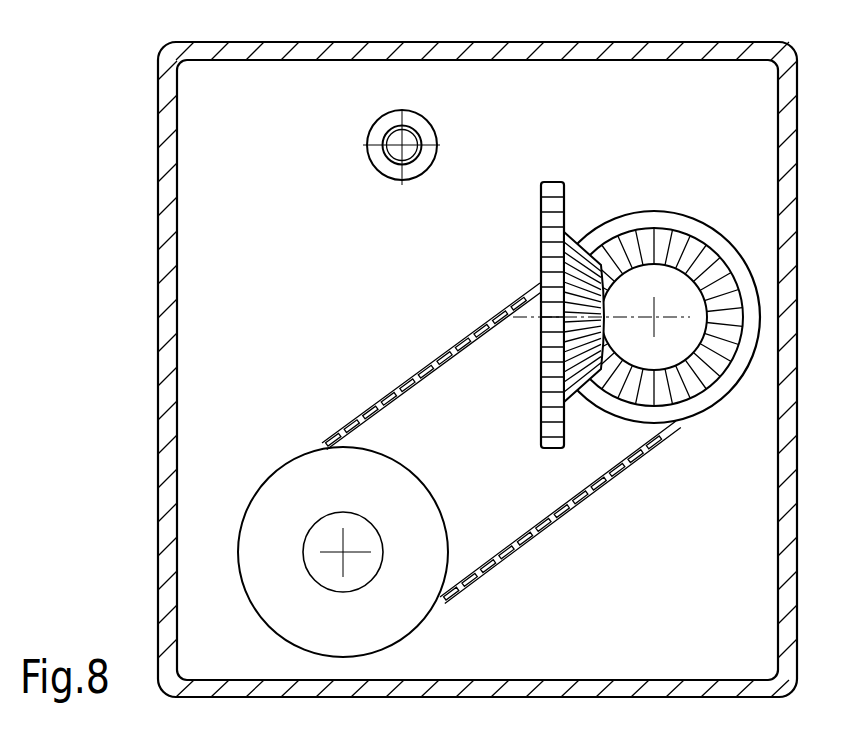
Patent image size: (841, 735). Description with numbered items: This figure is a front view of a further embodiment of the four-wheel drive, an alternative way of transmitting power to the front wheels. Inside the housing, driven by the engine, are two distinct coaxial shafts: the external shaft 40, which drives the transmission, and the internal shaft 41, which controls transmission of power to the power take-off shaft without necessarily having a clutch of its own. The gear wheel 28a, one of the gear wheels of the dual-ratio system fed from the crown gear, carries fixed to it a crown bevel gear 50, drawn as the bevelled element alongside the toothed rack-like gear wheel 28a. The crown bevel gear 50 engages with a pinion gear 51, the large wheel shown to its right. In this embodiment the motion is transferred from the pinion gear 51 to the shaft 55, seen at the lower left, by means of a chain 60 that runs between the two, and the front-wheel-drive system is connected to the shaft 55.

The gear wheel 28a is at (552, 183).
The external shaft 40 is at (382, 127).
The internal shaft 41 is at (388, 163).
The crown bevel gear 50 is at (575, 386).
The pinion gear 51 is at (675, 243).
The shaft 55 is at (315, 568).
The chain 60 is at (573, 498).